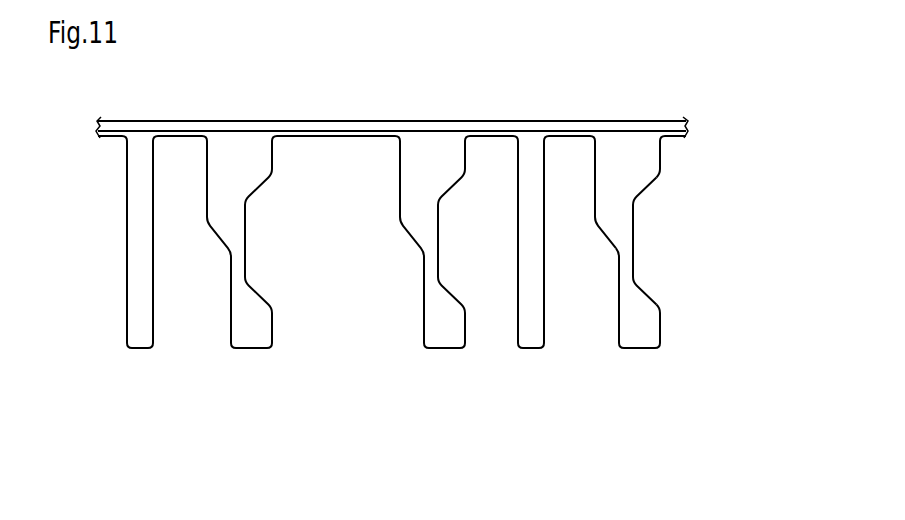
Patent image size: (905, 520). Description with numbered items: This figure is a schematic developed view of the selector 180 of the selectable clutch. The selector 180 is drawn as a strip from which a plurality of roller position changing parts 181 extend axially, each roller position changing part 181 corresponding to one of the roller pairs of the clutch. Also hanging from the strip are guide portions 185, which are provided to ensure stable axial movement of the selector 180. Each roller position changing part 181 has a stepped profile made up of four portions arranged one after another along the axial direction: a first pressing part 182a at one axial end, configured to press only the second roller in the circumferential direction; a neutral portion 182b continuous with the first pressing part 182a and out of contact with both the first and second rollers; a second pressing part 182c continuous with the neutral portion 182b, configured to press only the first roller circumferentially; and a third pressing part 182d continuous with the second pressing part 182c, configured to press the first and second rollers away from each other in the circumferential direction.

The selector 180 is at (287, 114).
The roller position changing part 181 is at (253, 343).
The guide portion 185 is at (140, 343).
The first pressing part 182a is at (647, 320).
The neutral portion 182b is at (628, 263).
The second pressing part 182c is at (615, 217).
The third pressing part 182d is at (652, 157).